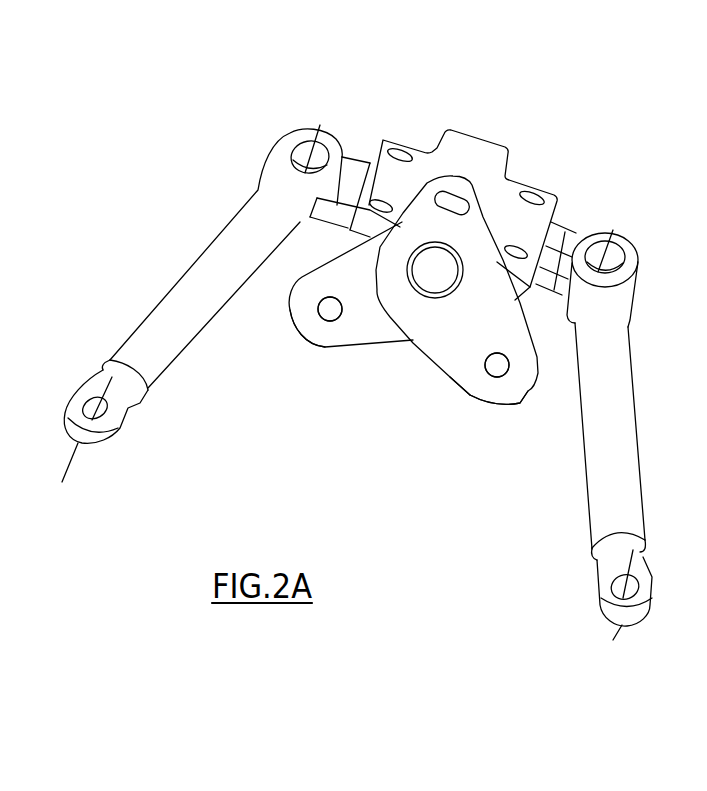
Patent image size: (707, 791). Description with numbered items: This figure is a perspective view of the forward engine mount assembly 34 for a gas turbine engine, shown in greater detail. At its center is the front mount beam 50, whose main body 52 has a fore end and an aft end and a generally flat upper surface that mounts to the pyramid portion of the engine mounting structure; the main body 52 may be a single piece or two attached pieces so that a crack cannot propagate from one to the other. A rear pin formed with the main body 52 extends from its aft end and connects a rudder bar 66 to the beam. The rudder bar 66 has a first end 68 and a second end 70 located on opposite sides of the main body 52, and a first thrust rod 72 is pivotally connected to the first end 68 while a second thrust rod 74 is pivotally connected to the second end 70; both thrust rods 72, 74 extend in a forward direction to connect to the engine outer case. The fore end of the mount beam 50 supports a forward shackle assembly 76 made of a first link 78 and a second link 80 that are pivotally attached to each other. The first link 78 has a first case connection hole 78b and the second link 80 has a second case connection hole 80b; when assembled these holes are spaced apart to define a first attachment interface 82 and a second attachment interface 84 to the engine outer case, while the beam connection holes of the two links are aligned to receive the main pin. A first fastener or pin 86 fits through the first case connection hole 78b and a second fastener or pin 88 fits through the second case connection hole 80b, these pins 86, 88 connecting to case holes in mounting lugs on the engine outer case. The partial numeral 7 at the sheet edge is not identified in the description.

The frame 7 is at (702, 503).
The forward engine mount assembly 34 is at (629, 150).
The front mount beam 50 is at (430, 140).
The main body 52 is at (533, 239).
The rudder bar 66 is at (563, 230).
The first end 68 is at (348, 157).
The second end 70 is at (593, 229).
The first thrust rod 72 is at (192, 265).
The second thrust rod 74 is at (640, 443).
The forward shackle assembly 76 is at (511, 415).
The first link 78 is at (450, 378).
The first case connection hole 78b is at (490, 403).
The second link 80 is at (357, 346).
The second case connection hole 80b is at (330, 324).
The first attachment interface 82 is at (498, 342).
The second attachment interface 84 is at (337, 282).
The first fastener or pin 86 is at (500, 369).
The second fastener or pin 88 is at (328, 310).